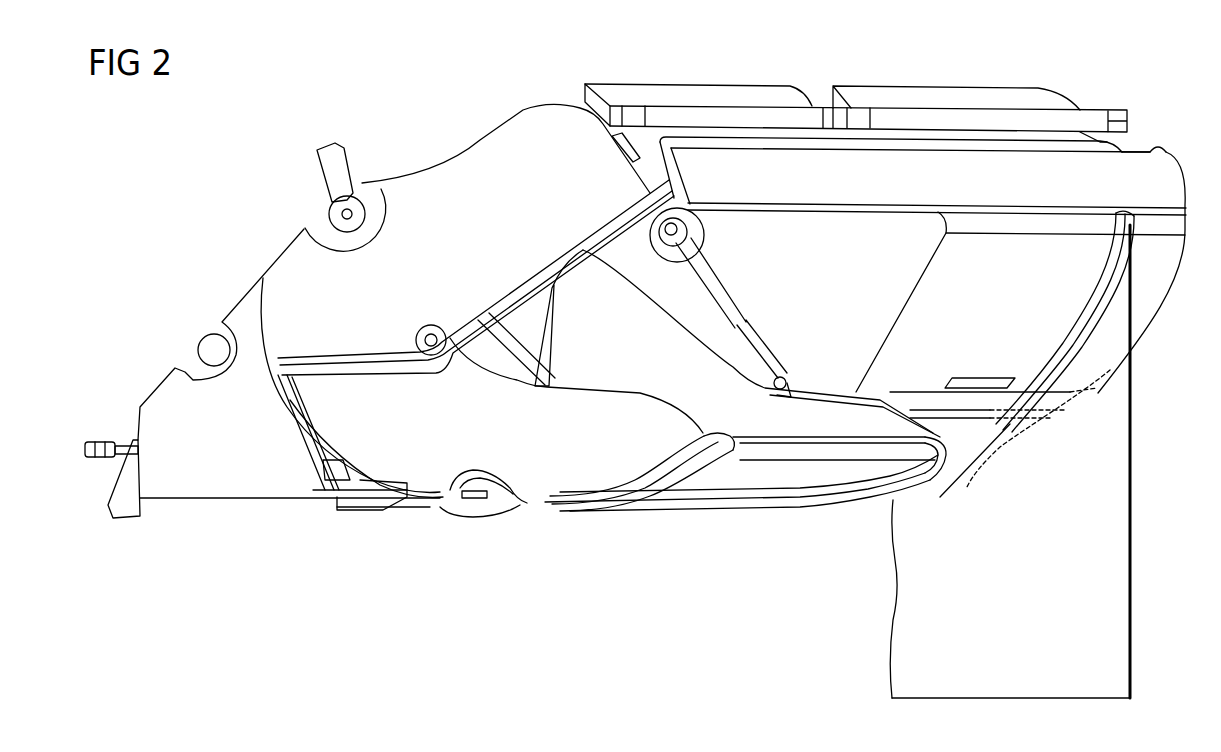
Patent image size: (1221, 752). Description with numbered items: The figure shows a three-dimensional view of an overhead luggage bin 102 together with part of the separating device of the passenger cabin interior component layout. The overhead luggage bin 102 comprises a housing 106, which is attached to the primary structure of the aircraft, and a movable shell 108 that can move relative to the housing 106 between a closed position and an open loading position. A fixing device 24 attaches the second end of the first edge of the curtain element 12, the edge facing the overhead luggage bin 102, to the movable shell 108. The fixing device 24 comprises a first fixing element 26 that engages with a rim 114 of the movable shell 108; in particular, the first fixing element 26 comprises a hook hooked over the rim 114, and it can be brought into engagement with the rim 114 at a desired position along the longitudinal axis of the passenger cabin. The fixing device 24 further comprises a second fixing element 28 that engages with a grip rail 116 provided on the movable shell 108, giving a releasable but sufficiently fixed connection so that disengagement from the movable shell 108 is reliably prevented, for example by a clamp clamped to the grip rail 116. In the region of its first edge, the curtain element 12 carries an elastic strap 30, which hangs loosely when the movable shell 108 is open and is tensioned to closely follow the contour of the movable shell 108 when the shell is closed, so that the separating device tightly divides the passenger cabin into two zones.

The curtain element 12 is at (910, 634).
The fixing device 24 is at (1082, 304).
The first fixing element 26 is at (1120, 212).
The second fixing element 28 is at (987, 416).
The elastic strap 30 is at (967, 477).
The overhead luggage bin 102 is at (440, 118).
The housing 106 is at (527, 130).
The movable shell 108 is at (400, 462).
The rim 114 is at (992, 210).
The grip rail 116 is at (928, 403).